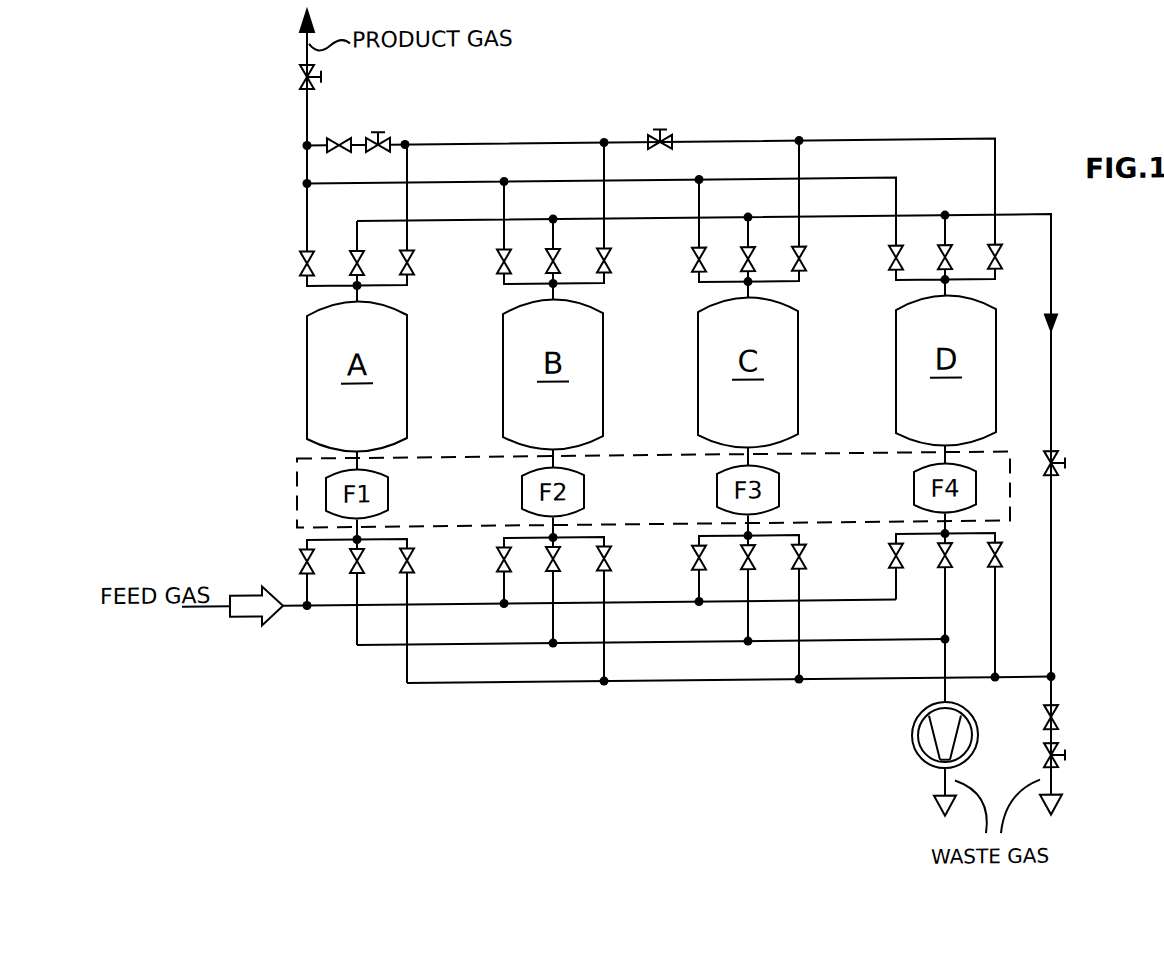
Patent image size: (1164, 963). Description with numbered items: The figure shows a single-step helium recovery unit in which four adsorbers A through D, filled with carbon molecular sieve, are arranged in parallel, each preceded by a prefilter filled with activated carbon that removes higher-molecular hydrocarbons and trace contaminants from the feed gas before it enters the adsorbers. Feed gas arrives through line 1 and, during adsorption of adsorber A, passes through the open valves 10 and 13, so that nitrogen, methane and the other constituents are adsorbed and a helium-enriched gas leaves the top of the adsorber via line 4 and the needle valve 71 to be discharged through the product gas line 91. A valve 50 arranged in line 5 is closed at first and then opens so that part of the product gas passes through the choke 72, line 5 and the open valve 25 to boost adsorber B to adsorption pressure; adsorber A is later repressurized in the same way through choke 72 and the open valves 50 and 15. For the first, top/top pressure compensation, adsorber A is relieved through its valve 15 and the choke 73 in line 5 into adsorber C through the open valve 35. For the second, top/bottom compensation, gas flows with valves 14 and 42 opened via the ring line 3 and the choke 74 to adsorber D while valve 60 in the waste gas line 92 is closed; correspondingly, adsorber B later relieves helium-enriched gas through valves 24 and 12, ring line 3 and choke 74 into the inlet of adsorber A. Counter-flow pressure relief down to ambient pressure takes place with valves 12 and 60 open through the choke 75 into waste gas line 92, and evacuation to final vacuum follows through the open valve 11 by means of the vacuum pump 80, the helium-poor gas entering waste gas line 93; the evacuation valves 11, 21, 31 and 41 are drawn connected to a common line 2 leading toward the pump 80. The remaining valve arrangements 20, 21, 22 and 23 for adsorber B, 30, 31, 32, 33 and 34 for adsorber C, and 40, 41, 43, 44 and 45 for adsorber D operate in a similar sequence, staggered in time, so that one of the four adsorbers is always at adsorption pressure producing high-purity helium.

The feed gas line 1 is at (330, 607).
The intermediate product line 2 is at (380, 647).
The ring line 3 is at (838, 221).
The product line from adsorber top 4 is at (745, 183).
The pressure compensation and build-up line 5 is at (512, 144).
The feed valve of adsorber A 10 is at (318, 558).
The evacuation valve of adsorber A 11 is at (368, 558).
The counter-flow relief valve of adsorber A 12 is at (418, 558).
The outlet valve of adsorber A 13 is at (318, 260).
The top pressure compensation valve of adsorber A 14 is at (368, 260).
The top valve of adsorber A to line 5 15 is at (418, 260).
The valve of adsorber B 20 is at (515, 558).
The valve of adsorber B 21 is at (564, 558).
The valve of adsorber B 22 is at (615, 558).
The valve of adsorber B 23 is at (515, 260).
The outlet compensation valve of adsorber B 24 is at (564, 260).
The top valve of adsorber B to line 5 25 is at (615, 260).
The valve of adsorber C 30 is at (710, 558).
The valve of adsorber C 31 is at (759, 558).
The valve of adsorber C 32 is at (810, 558).
The valve of adsorber C 33 is at (710, 260).
The valve of adsorber C 34 is at (759, 260).
The top valve of adsorber C to line 5 35 is at (810, 260).
The valve of adsorber D 40 is at (907, 558).
The valve of adsorber D 41 is at (956, 558).
The inlet compensation valve of adsorber D 42 is at (1006, 558).
The valve of adsorber D 43 is at (907, 260).
The valve of adsorber D 44 is at (956, 260).
The valve of adsorber D 45 is at (1006, 260).
The valve in line 5 50 is at (340, 138).
The valve in waste gas line 92 60 is at (1058, 726).
The needle valve 71 is at (300, 78).
The choke 72 is at (385, 136).
The choke in line 5 73 is at (668, 138).
The choke in ring line 3 74 is at (1062, 471).
The choke in waste gas line 75 is at (1058, 768).
The vacuum pump 80 is at (912, 740).
The product gas line 91 is at (306, 129).
The waste gas line 92 is at (1056, 690).
The waste gas line 93 is at (940, 689).